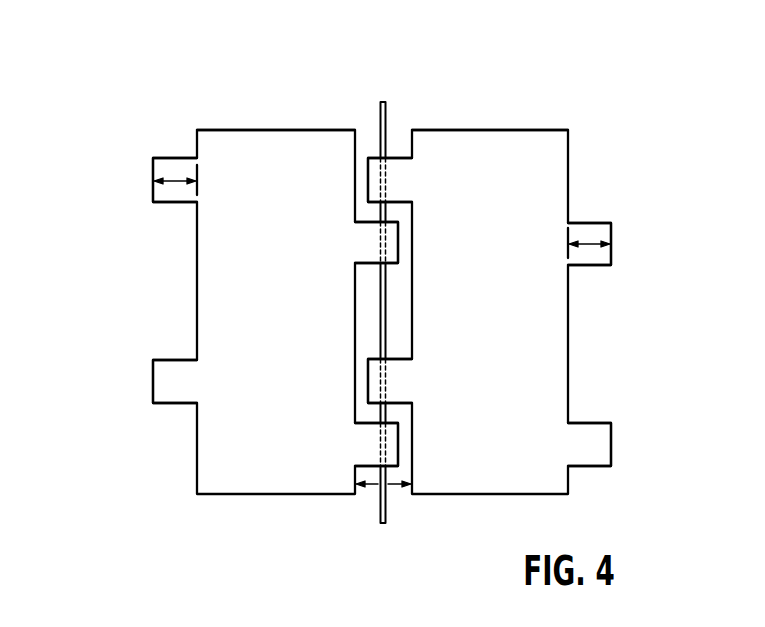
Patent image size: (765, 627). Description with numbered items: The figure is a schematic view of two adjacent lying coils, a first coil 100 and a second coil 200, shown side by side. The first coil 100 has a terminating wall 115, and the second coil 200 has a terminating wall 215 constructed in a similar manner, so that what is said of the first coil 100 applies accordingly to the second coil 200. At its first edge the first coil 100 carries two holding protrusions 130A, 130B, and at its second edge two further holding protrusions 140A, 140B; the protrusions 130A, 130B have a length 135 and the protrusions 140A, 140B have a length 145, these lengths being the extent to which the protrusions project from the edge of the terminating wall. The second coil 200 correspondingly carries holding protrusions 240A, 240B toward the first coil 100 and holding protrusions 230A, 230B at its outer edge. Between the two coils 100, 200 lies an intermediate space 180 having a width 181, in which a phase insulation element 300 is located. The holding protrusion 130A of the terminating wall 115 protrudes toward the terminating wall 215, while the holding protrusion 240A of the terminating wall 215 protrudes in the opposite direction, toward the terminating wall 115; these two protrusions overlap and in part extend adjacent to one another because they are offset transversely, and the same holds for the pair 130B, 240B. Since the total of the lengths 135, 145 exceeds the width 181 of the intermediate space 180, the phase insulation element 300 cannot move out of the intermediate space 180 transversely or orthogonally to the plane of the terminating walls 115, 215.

The first coil 100 is at (191, 124).
The second coil 200 is at (620, 50).
The terminating wall 115 is at (224, 130).
The terminating wall 215 is at (536, 130).
The phase insulation element 300 is at (378, 116).
The holding protrusion 140A is at (153, 173).
The holding protrusion 140B is at (153, 383).
The length 145 is at (158, 228).
The holding protrusion 130A is at (372, 243).
The holding protrusion 130B is at (372, 442).
The holding protrusion 240A is at (443, 175).
The holding protrusion 240B is at (440, 380).
The holding protrusion 230A is at (648, 248).
The holding protrusion 230B is at (648, 446).
The length 135 is at (595, 290).
The intermediate space 180 is at (420, 547).
The width 181 is at (327, 536).